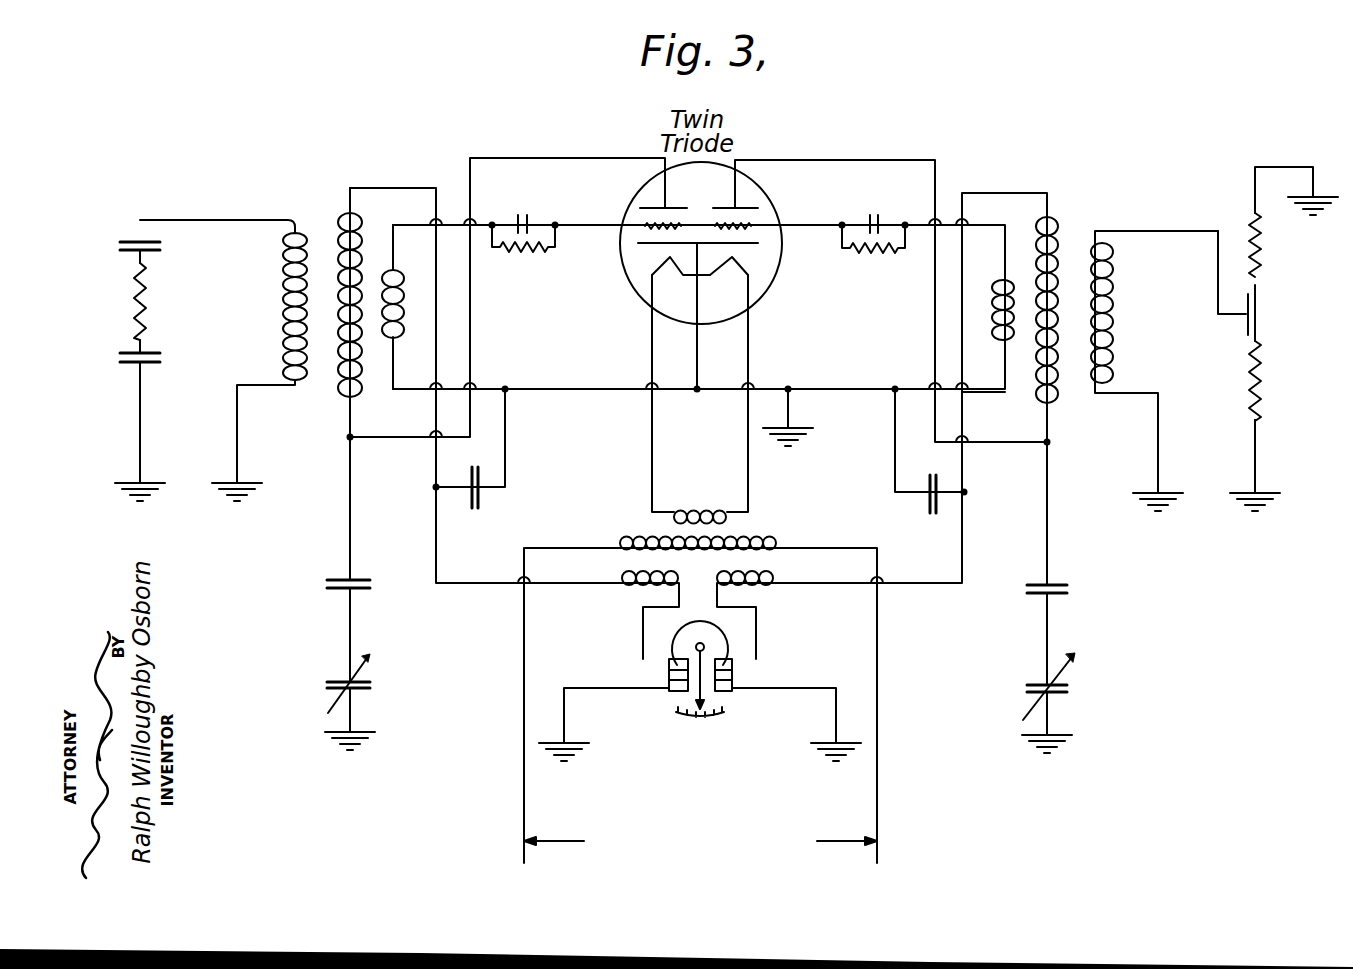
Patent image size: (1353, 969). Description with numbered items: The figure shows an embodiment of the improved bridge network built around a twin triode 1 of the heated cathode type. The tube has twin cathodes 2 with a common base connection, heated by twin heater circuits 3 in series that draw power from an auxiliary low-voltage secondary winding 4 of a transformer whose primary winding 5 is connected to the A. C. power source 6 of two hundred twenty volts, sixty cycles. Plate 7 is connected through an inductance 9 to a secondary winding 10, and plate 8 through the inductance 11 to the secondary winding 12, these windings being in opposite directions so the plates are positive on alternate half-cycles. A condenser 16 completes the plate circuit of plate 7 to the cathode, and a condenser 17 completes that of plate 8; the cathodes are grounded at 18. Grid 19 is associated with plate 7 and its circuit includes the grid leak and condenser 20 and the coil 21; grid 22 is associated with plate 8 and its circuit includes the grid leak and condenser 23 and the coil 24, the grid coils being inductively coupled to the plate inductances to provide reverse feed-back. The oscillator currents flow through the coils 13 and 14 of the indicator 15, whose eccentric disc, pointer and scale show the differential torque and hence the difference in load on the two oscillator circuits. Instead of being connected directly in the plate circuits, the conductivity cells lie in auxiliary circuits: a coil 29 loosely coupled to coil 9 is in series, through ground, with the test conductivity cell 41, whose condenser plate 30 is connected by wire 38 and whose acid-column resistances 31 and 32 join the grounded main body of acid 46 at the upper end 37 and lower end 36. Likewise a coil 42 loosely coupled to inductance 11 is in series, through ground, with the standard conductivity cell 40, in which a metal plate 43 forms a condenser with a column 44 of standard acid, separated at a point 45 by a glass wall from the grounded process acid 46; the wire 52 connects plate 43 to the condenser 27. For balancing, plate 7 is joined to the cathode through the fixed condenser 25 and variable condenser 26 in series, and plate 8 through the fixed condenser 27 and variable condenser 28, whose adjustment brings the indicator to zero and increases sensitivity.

The twin triode 1 is at (757, 312).
The cathode 2 is at (762, 275).
The heater circuit 3 is at (742, 272).
The auxiliary low-voltage secondary winding 4 is at (696, 512).
The primary winding 5 is at (642, 540).
The A. C. power source 6 is at (708, 822).
The plate 7 is at (750, 207).
The plate 8 is at (652, 205).
The inductance 9 is at (1038, 372).
The secondary winding 10 is at (768, 588).
The inductance 11 is at (358, 385).
The secondary winding 12 is at (632, 590).
The coil 13 is at (737, 680).
The coil 14 is at (665, 680).
The indicator 15 is at (684, 738).
The condenser 16 is at (928, 482).
The condenser 17 is at (475, 462).
The ground 18 is at (800, 432).
The grid 19 is at (760, 246).
The grid leak and condenser 20 is at (888, 222).
The coil 21 is at (992, 296).
The grid 22 is at (642, 236).
The grid leak and condenser 23 is at (500, 212).
The coil 24 is at (398, 293).
The fixed condenser 25 is at (1070, 589).
The variable condenser 26 is at (1070, 689).
The fixed condenser 27 is at (370, 582).
The variable condenser 28 is at (372, 686).
The coil 29 is at (1090, 375).
The condenser plate 30 is at (1246, 316).
The resistance 31 is at (1262, 262).
The resistance 32 is at (1262, 390).
The lower end 36 is at (1257, 457).
The upper end 37 is at (1255, 182).
The wire 38 is at (1148, 228).
The standard conductivity cell 40 is at (172, 525).
The test conductivity cell 41 is at (1236, 553).
The coil 42 is at (306, 372).
The condenser plate 43 is at (132, 240).
The column of standard acid 44 is at (132, 280).
The point 45 is at (132, 350).
The body of process acid 46 is at (132, 366).
The wire 52 is at (196, 220).